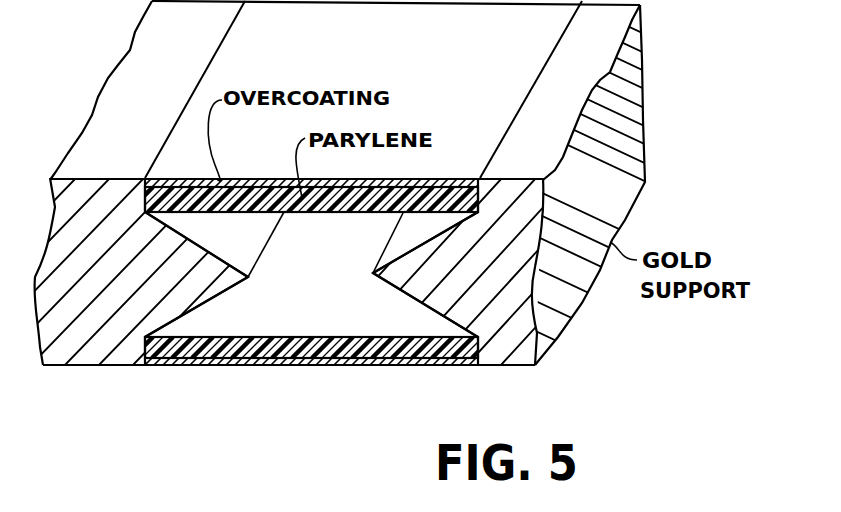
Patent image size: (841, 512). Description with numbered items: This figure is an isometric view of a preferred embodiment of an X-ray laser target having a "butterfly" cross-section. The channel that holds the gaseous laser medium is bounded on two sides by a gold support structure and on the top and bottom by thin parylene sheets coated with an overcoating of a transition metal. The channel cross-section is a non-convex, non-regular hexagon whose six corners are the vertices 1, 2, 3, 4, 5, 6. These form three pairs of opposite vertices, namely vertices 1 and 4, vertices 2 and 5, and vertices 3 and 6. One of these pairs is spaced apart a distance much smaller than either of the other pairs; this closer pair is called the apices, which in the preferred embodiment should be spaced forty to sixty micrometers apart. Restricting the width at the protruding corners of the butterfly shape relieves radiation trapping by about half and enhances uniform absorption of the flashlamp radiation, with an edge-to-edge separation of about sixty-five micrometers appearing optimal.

The vertex 1 is at (472, 216).
The vertex 2 is at (373, 273).
The vertex 3 is at (467, 334).
The vertex 4 is at (150, 335).
The vertex 5 is at (249, 277).
The vertex 6 is at (155, 213).